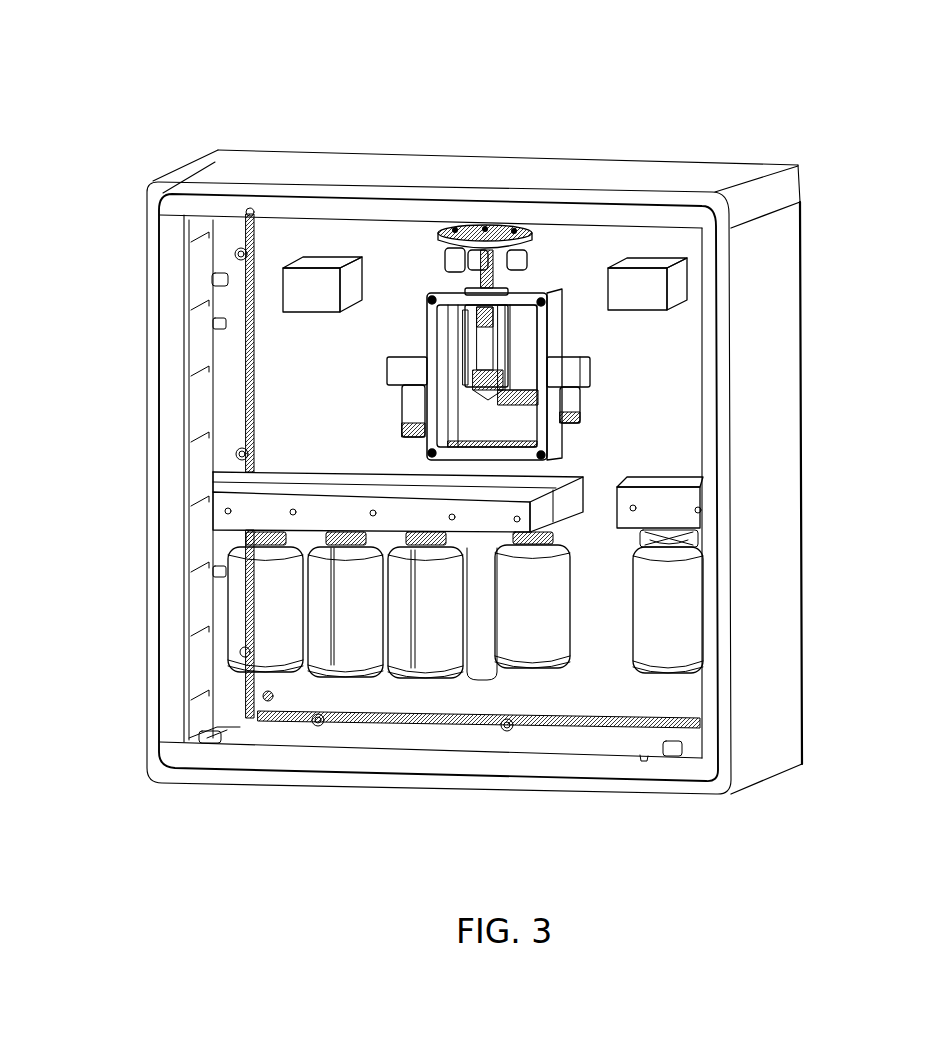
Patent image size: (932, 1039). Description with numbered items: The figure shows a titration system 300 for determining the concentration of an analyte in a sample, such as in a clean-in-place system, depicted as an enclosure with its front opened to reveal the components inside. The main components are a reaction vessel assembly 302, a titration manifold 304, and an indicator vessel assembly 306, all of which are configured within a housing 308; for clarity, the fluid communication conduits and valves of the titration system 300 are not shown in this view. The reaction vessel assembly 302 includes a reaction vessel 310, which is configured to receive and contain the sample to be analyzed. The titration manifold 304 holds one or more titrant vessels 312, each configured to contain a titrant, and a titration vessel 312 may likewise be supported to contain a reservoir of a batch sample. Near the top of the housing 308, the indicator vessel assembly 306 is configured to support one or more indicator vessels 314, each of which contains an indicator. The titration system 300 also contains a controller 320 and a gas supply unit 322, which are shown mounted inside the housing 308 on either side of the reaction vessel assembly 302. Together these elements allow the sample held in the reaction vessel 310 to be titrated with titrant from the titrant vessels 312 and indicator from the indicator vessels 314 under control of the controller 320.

The titration system 300 is at (840, 118).
The reaction vessel assembly 302 is at (411, 291).
The titration manifold 304 is at (270, 473).
The indicator vessel assembly 306 is at (462, 213).
The housing 308 is at (258, 165).
The reaction vessel 310 is at (487, 355).
The titrant vessel 312 is at (347, 608).
The indicator vessel 314 is at (505, 252).
The controller 320 is at (283, 283).
The gas supply unit 322 is at (690, 283).